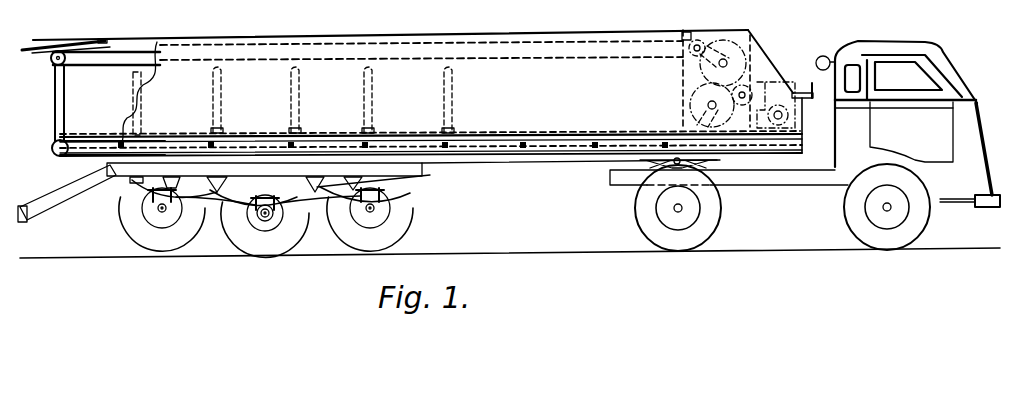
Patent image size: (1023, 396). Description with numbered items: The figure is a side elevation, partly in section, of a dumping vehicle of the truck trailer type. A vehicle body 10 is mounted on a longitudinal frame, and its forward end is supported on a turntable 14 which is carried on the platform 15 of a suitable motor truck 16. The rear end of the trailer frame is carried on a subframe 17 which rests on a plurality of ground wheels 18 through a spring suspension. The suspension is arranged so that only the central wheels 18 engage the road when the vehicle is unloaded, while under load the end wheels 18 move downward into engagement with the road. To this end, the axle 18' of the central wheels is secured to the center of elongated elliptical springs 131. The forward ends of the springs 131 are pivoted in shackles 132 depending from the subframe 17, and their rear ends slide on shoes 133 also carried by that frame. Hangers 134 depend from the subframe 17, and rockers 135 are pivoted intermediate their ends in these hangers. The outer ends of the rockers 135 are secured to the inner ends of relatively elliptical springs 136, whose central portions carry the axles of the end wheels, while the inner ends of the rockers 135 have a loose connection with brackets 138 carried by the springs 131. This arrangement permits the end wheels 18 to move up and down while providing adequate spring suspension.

The vehicle body 10 is at (551, 158).
The turntable 14 is at (640, 182).
The platform 15 is at (786, 183).
The motor truck 16 is at (973, 137).
The subframe 17 is at (453, 167).
The ground wheels 18 is at (268, 222).
The axle of the central wheels 18' is at (267, 201).
The elongated elliptical springs 131 is at (218, 212).
The shackles 132 is at (353, 180).
The shoes 133 is at (171, 178).
The hangers 134 is at (217, 180).
The rockers 135 is at (228, 190).
The relatively elliptical springs 136 is at (162, 212).
The brackets 138 is at (427, 175).